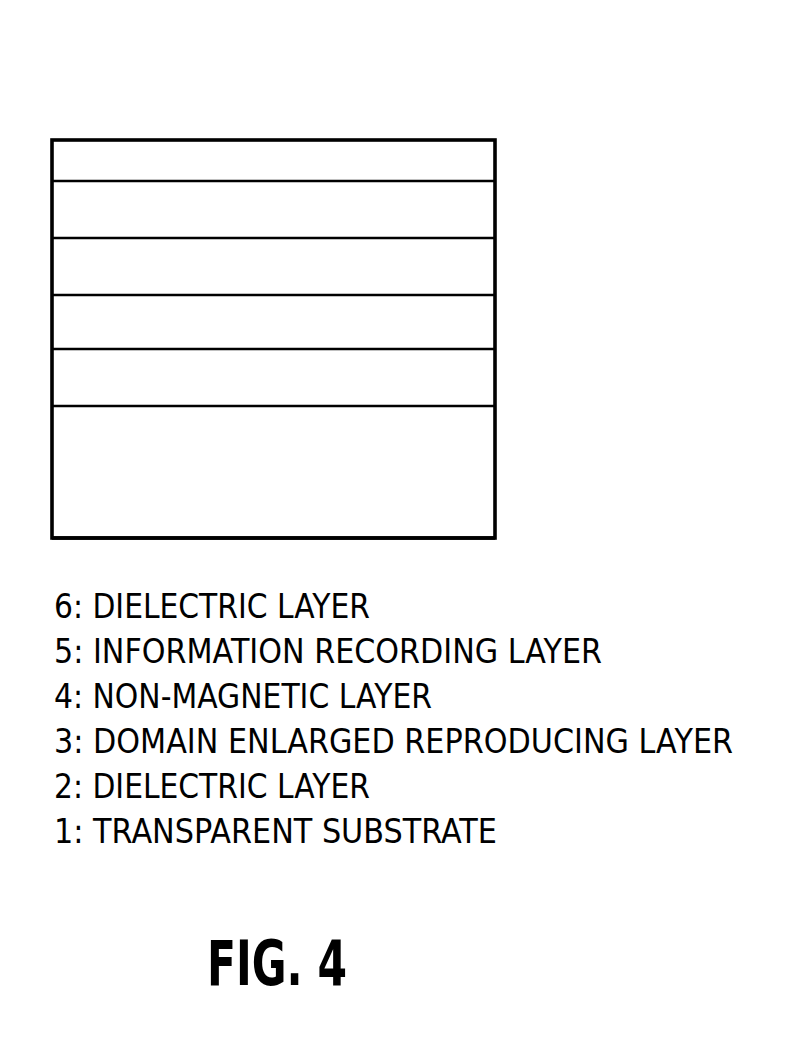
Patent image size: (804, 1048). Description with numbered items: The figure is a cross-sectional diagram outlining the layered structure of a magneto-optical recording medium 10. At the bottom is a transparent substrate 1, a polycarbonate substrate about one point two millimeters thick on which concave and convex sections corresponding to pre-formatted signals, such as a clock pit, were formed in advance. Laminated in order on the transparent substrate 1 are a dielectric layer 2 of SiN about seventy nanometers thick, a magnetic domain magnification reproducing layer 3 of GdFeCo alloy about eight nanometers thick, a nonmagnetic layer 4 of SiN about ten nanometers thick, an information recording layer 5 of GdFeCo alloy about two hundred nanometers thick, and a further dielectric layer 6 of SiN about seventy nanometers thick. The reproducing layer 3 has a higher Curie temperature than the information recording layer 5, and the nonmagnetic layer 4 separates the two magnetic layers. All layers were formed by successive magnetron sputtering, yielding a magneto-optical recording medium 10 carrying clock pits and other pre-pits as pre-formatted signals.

The magneto-optical recording medium 10 is at (381, 86).
The dielectric layer 6 is at (488, 159).
The information recording layer 5 is at (488, 205).
The nonmagnetic layer 4 is at (488, 269).
The magnetic domain magnification reproducing layer 3 is at (488, 322).
The dielectric layer 2 is at (488, 375).
The transparent substrate 1 is at (488, 460).